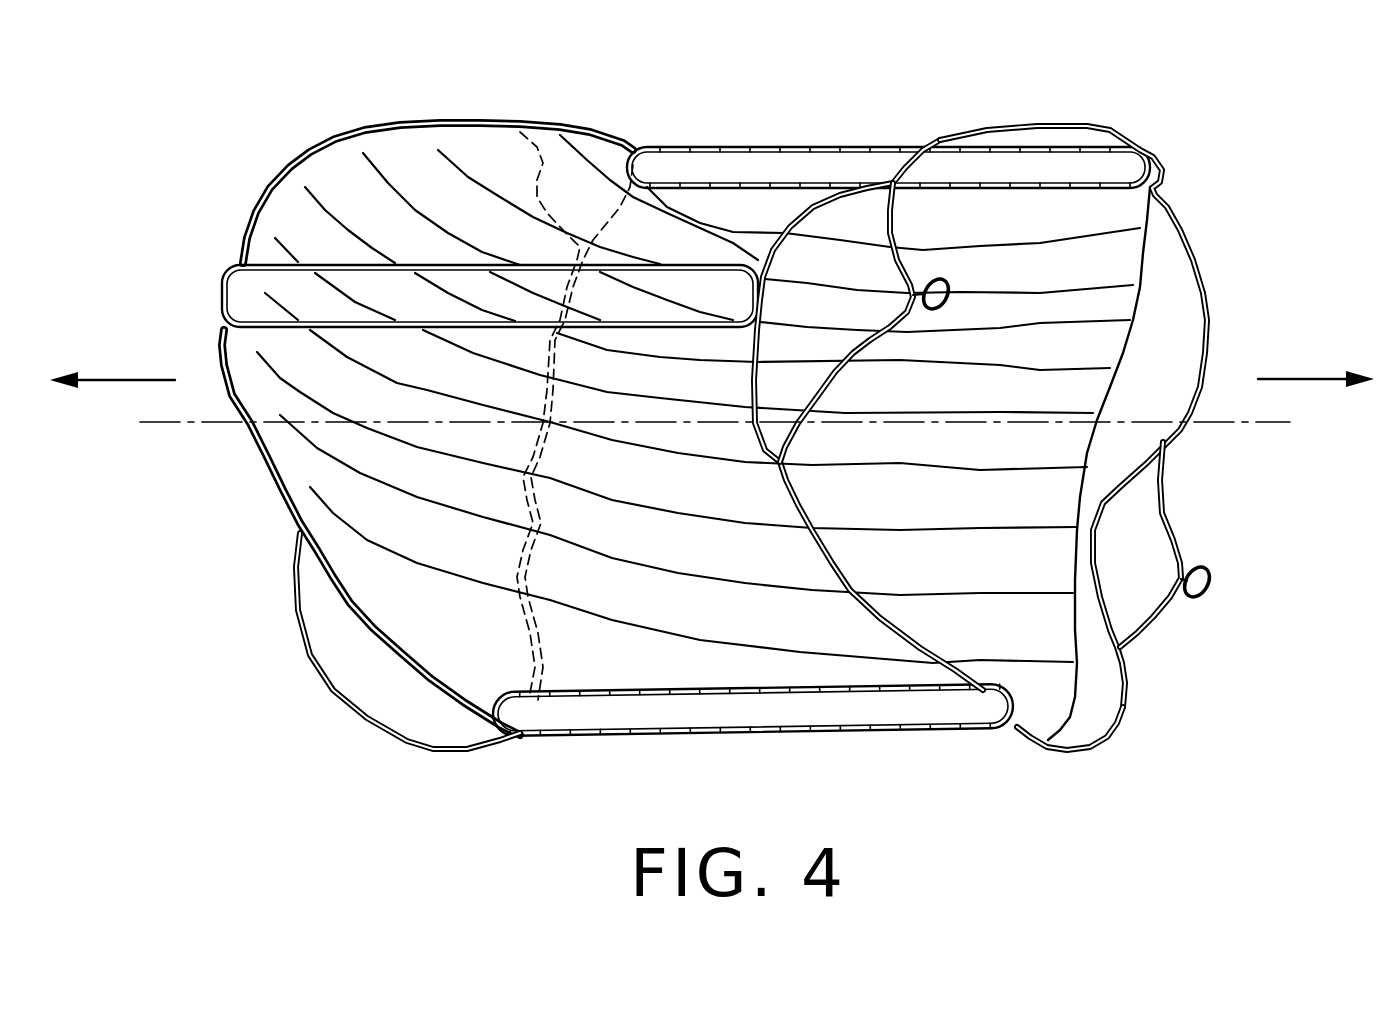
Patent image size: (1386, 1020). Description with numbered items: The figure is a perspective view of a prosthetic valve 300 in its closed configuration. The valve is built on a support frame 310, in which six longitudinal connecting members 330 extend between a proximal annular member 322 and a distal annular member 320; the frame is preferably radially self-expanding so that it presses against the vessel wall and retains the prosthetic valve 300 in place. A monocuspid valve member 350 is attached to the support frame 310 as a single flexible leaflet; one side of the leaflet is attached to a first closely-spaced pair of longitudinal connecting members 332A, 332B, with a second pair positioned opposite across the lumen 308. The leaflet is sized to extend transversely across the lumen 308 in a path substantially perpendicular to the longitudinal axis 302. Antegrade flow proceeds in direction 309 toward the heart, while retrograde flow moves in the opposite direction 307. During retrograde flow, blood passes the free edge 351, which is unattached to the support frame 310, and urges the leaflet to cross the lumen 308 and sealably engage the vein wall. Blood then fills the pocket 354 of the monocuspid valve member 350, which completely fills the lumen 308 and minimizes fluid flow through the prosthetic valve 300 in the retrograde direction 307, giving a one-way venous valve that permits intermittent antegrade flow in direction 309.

The prosthetic valve 300 is at (640, 429).
The longitudinal axis 302 is at (1250, 427).
The retrograde direction 307 is at (133, 380).
The lumen 308 is at (992, 337).
The antegrade direction 309 is at (1318, 379).
The support frame 310 is at (1100, 756).
The distal annular member 320 is at (291, 540).
The proximal annular member 322 is at (1130, 659).
The longitudinal connecting members 330 is at (545, 754).
The longitudinal connecting member 332A is at (890, 148).
The longitudinal connecting member 332B is at (798, 181).
The monocuspid valve member 350 is at (293, 468).
The free edge 351 is at (1086, 705).
The pocket 354 is at (714, 500).